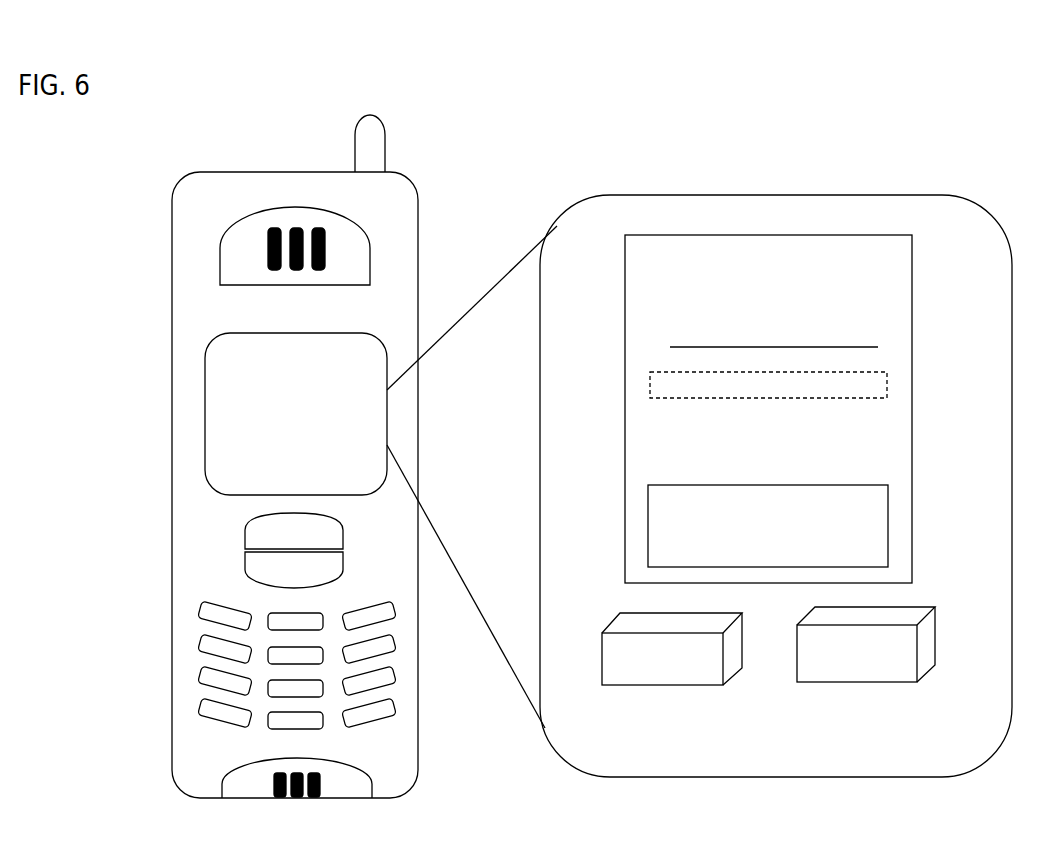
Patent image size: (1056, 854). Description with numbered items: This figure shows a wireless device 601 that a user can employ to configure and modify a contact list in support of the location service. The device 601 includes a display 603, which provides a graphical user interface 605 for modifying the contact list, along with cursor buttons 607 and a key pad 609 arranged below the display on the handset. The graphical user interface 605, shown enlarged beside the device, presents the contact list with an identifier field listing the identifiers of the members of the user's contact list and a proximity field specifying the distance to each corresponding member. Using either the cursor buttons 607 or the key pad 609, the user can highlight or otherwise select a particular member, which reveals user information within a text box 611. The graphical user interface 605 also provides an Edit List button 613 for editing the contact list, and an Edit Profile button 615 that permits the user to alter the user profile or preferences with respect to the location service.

The wireless device 601 is at (417, 218).
The display 603 is at (205, 396).
The graphical user interface 605 is at (792, 195).
The cursor buttons 607 is at (242, 540).
The key pad 609 is at (162, 593).
The text box 611 is at (890, 528).
The Edit List button 613 is at (648, 685).
The Edit Profile button 615 is at (852, 682).